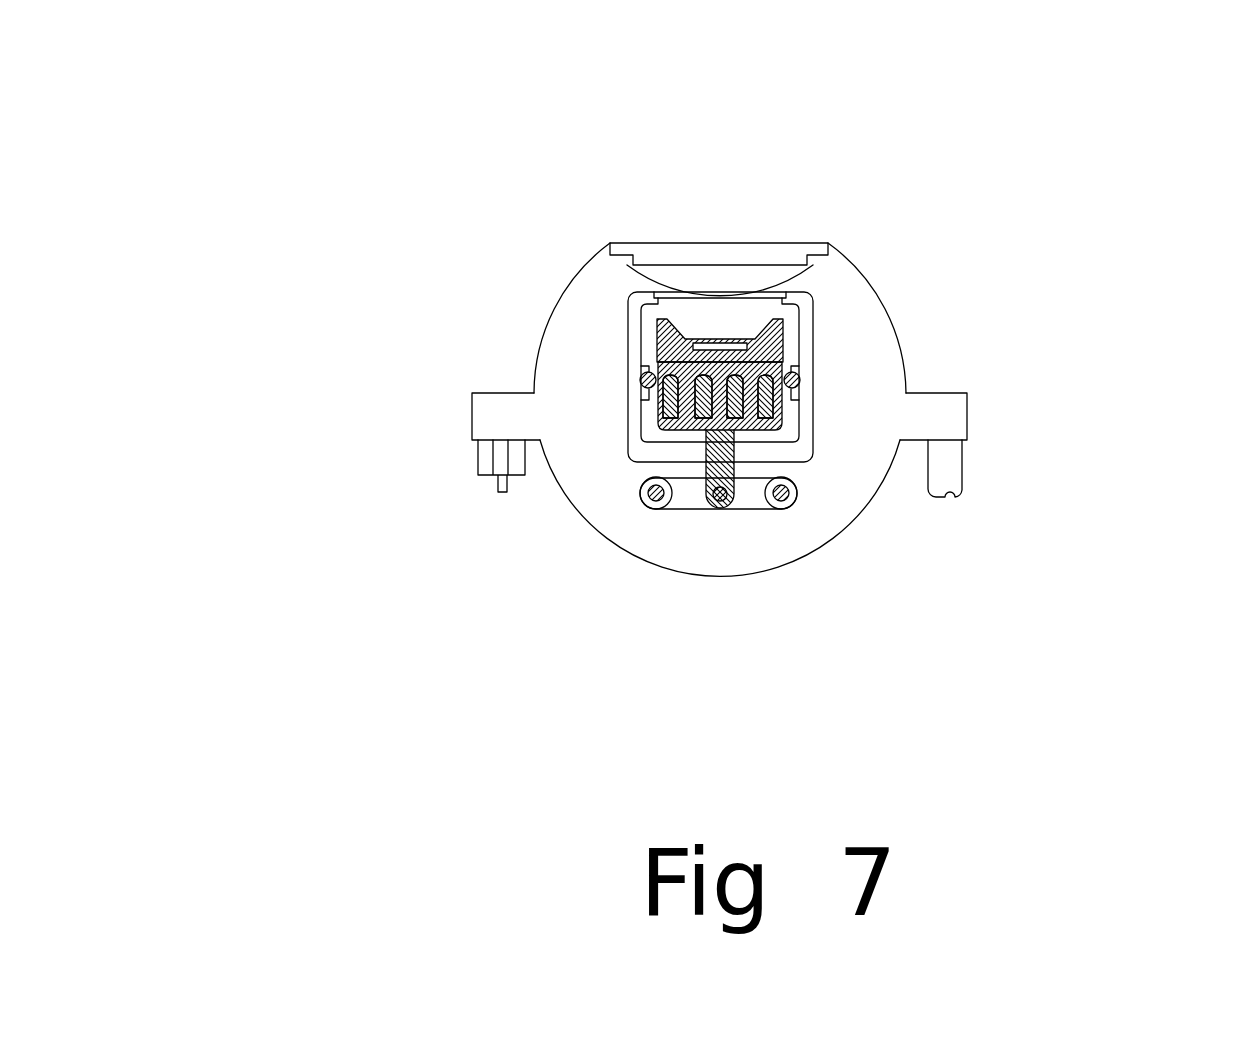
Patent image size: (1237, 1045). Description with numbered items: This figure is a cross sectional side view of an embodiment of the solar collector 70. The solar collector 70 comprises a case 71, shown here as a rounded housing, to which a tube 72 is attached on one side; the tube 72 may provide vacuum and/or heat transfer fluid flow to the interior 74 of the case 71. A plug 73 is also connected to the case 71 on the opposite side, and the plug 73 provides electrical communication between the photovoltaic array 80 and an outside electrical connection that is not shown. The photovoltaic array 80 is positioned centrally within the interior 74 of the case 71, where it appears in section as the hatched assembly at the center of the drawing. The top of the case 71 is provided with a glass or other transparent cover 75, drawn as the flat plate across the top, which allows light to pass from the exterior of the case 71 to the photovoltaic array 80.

The solar collector 70 is at (603, 568).
The case 71 is at (885, 307).
The tube 72 is at (960, 468).
The plug 73 is at (478, 452).
The interior 74 is at (600, 383).
The transparent cover 75 is at (660, 240).
The photovoltaic array 80 is at (628, 292).